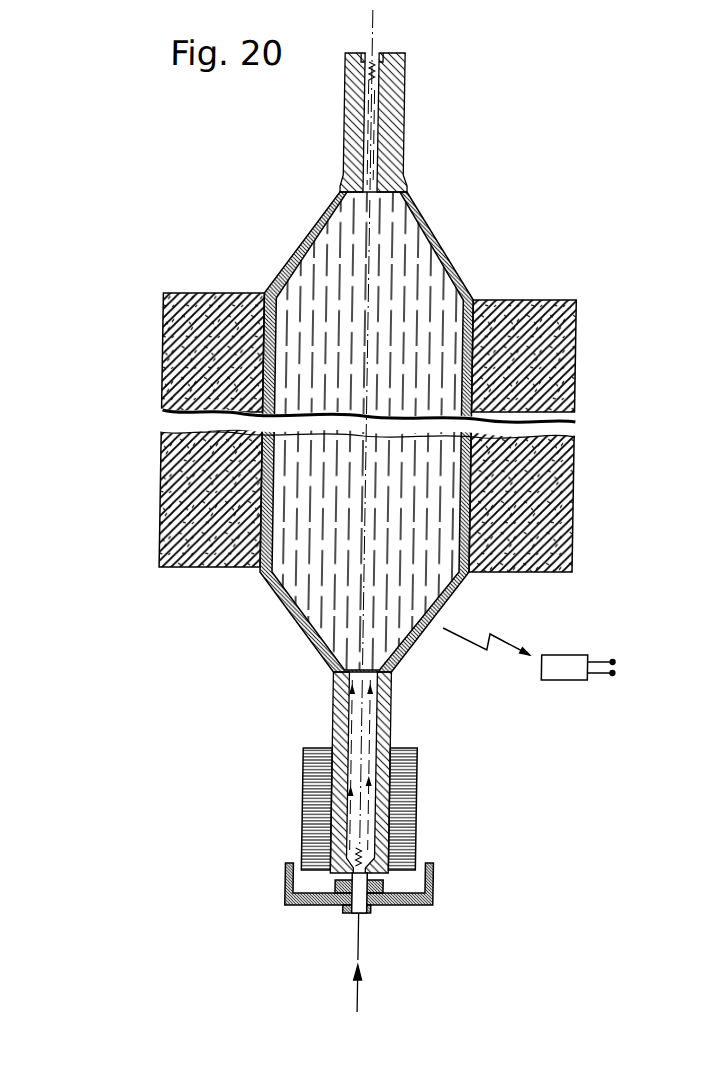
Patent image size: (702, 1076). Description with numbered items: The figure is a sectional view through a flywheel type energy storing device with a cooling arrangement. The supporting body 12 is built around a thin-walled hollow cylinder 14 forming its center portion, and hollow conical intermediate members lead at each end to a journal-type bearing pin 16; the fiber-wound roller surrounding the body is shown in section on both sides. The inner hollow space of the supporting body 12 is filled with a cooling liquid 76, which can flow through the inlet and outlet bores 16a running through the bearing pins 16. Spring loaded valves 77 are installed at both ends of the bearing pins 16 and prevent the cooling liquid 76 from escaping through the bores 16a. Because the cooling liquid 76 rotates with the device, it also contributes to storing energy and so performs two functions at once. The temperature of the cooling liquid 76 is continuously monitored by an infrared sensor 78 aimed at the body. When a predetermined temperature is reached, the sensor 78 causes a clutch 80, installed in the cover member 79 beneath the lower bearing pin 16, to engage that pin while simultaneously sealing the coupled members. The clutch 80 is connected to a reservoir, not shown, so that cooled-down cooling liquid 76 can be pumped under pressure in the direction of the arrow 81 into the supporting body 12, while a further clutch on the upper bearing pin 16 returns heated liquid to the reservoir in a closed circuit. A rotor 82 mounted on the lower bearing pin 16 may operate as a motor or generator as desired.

The supporting body 12 is at (482, 266).
The hollow cylinder 14 is at (472, 290).
The bearing pin 16 is at (395, 147).
The inlet and outlet bores 16a is at (375, 110).
The cooling liquid 76 is at (339, 250).
The spring loaded valve 77 is at (379, 71).
The infrared sensor 78 is at (586, 680).
The cover member 79 is at (324, 900).
The clutch 80 is at (394, 900).
The arrow 81 is at (373, 1010).
The rotor 82 is at (417, 780).